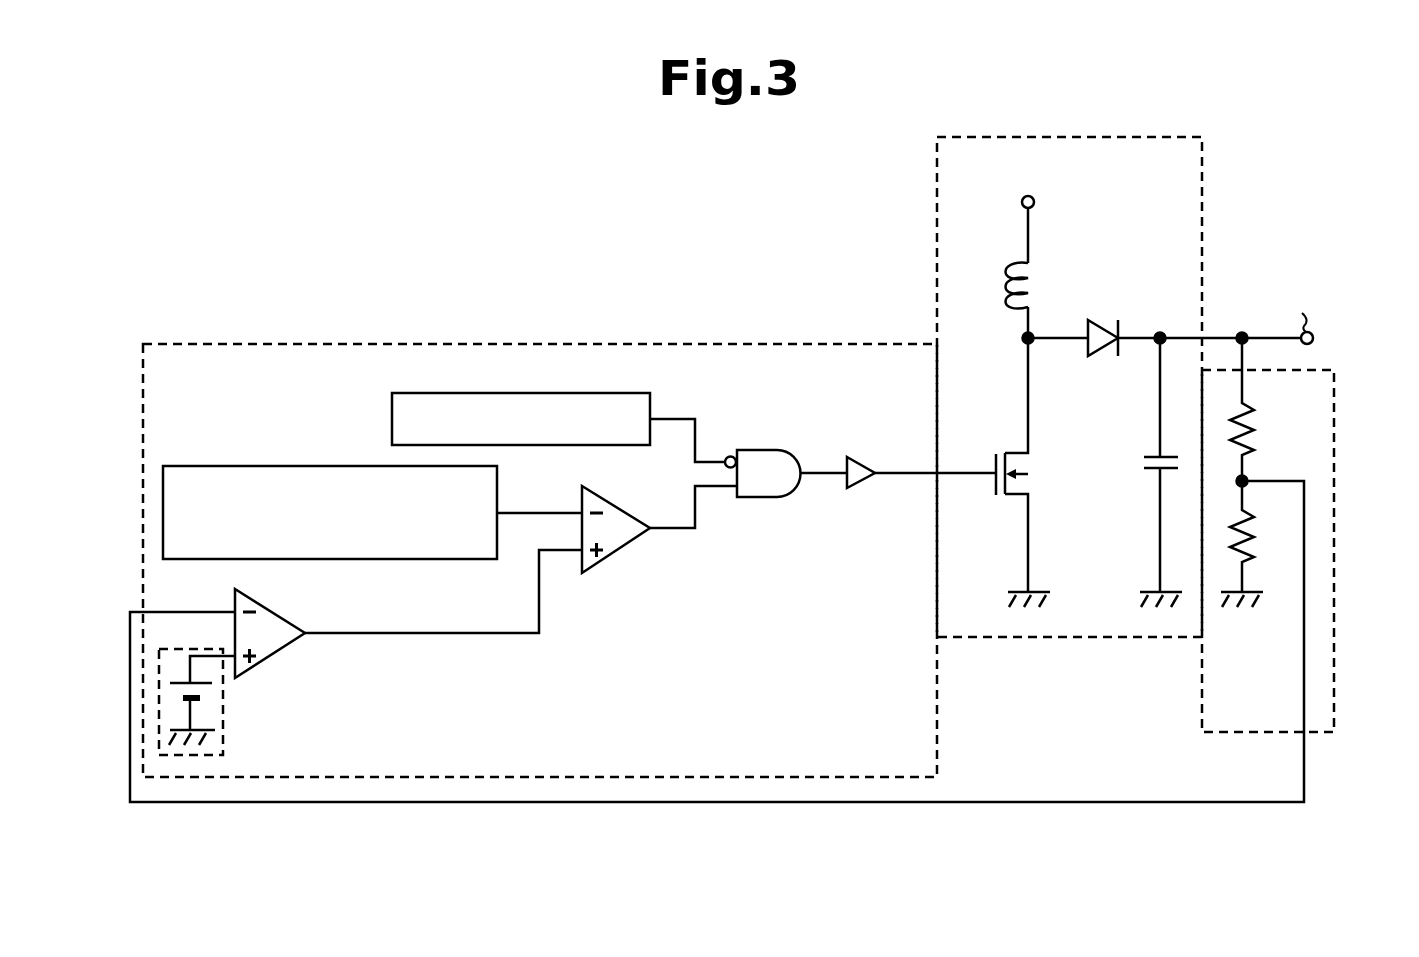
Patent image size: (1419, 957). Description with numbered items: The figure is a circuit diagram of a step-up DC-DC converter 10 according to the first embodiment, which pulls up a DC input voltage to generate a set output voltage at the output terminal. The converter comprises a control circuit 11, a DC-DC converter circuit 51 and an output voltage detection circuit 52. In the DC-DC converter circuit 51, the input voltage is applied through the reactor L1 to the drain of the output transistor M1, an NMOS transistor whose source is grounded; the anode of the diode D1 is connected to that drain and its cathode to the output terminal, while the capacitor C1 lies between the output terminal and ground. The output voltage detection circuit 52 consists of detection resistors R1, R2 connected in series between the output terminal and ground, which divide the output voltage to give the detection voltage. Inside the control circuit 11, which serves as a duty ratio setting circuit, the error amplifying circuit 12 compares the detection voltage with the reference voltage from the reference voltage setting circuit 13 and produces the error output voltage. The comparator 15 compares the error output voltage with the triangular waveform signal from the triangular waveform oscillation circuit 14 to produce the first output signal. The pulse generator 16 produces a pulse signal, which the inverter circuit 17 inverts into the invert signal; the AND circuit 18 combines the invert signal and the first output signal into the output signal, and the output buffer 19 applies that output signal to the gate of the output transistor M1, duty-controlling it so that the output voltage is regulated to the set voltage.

The DC-DC converter 10 is at (788, 297).
The control circuit 11 is at (432, 343).
The error amplifying circuit 12 is at (283, 650).
The reference voltage setting circuit 13 is at (223, 720).
The triangular waveform oscillation circuit 14 is at (290, 466).
The comparator 15 is at (628, 545).
The pulse generator 16 is at (523, 393).
The inverter circuit 17 is at (730, 456).
The AND circuit 18 is at (762, 497).
The output buffer 19 is at (860, 456).
The DC-DC converter circuit 51 is at (1202, 173).
The output voltage detection circuit 52 is at (1334, 518).
The reactor L1 is at (1044, 268).
The diode D1 is at (1104, 320).
The output transistor M1 is at (1030, 455).
The capacitor C1 is at (1155, 453).
The detection resistor R1 is at (1254, 436).
The detection resistor R2 is at (1254, 542).